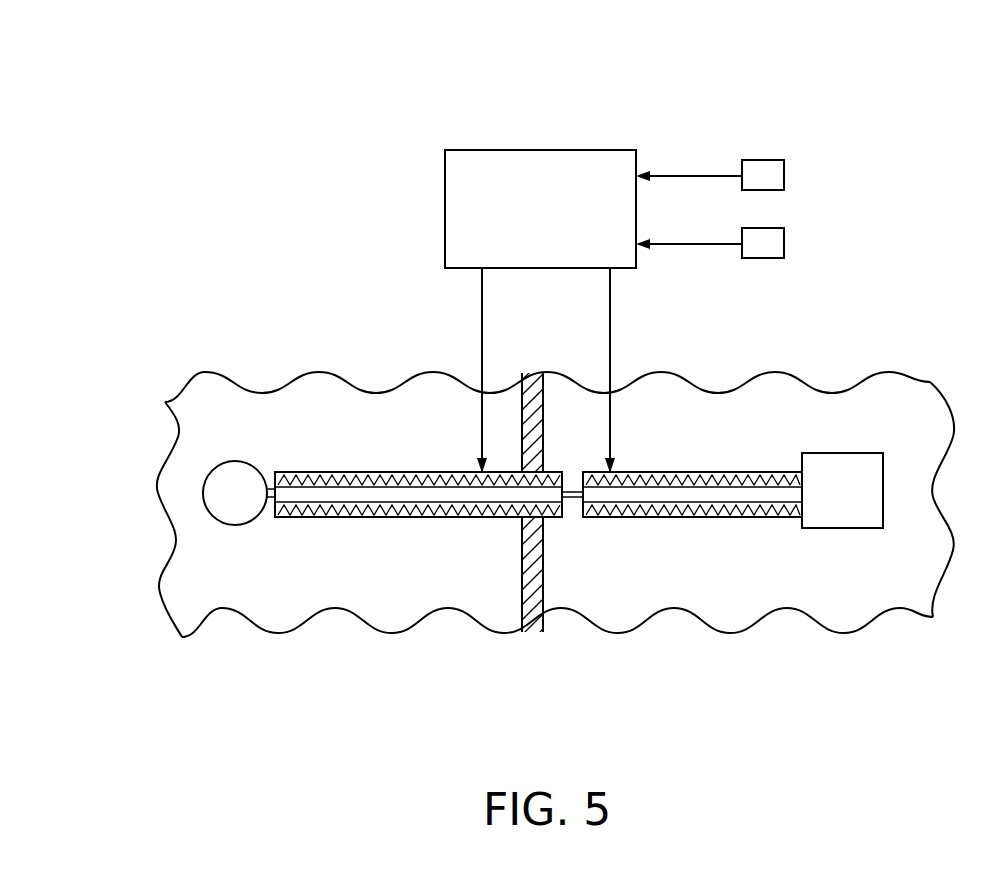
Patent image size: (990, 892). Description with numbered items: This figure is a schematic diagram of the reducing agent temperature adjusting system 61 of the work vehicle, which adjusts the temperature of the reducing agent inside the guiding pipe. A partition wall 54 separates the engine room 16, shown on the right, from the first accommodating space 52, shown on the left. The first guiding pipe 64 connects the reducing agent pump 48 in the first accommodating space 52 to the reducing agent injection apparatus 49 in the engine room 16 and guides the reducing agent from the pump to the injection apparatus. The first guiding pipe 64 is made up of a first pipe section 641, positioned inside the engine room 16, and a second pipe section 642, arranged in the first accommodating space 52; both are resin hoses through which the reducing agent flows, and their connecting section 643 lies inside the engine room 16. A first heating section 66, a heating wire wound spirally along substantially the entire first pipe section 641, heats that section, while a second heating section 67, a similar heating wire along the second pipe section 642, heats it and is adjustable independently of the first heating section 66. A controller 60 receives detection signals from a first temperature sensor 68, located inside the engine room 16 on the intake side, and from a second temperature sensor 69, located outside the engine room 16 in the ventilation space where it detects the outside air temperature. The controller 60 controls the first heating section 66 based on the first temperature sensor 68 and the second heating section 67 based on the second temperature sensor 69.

The engine room 16 is at (871, 586).
The reducing agent pump 48 is at (218, 473).
The reducing agent injection apparatus 49 is at (842, 465).
The first accommodating space 52 is at (256, 580).
The partition wall 54 is at (543, 413).
The controller 60 is at (450, 240).
The reducing agent temperature adjusting system 61 is at (664, 127).
The first guiding pipe 64 is at (652, 513).
The first heating section 66 is at (708, 475).
The second heating section 67 is at (347, 470).
The first temperature sensor 68 is at (772, 175).
The second temperature sensor 69 is at (772, 243).
The first pipe section 641 is at (688, 493).
The second pipe section 642 is at (502, 493).
The connecting section 643 is at (573, 497).